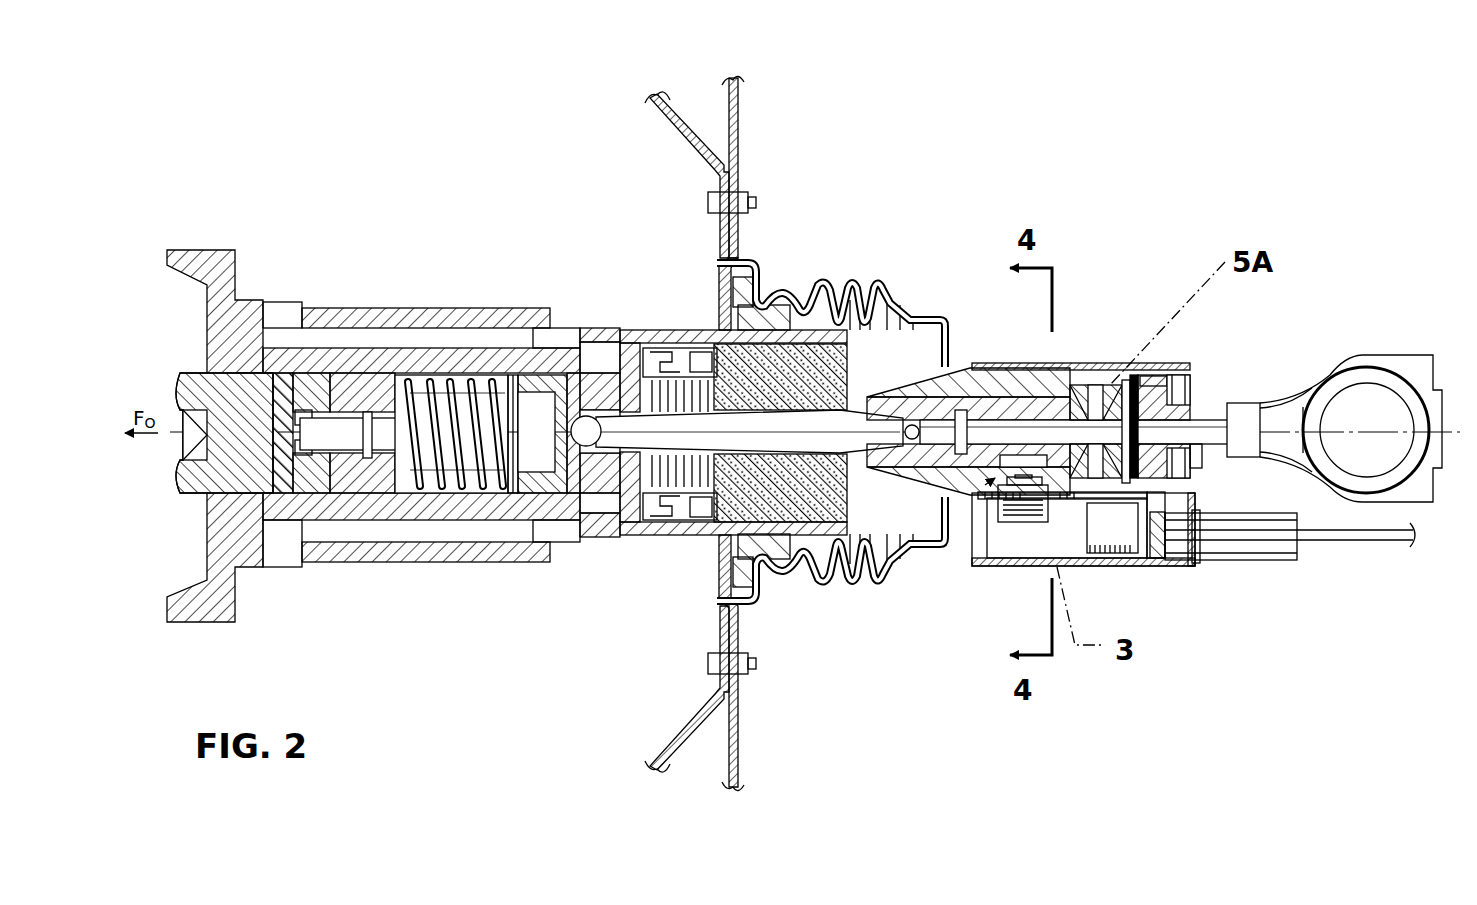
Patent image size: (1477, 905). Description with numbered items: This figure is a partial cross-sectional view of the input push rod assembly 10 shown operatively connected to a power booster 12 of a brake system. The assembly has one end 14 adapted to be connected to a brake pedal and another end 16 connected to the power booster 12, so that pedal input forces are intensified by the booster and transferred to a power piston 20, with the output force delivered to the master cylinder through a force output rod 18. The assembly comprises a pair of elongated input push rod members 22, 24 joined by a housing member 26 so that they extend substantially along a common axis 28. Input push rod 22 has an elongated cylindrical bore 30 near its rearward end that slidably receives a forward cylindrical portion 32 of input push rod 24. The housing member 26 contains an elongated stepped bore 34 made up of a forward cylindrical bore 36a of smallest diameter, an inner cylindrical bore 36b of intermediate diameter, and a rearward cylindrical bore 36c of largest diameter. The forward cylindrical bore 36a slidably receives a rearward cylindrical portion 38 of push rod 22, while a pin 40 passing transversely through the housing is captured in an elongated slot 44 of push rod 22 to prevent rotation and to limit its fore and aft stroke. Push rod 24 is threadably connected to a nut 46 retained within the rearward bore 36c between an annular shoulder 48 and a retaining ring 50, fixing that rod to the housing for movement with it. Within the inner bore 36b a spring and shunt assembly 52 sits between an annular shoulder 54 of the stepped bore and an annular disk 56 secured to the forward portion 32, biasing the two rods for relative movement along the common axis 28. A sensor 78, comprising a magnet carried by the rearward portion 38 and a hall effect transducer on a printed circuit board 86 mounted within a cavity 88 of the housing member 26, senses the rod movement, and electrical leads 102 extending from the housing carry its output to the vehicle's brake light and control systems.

The input push rod assembly 10 is at (1340, 268).
The power booster 12 is at (763, 176).
The one end 14 is at (1340, 363).
The another end 16 is at (583, 407).
The force output rod 18 is at (265, 375).
The power piston 20 is at (609, 392).
The input push rod member 22 is at (737, 440).
The input push rod member 24 is at (1237, 407).
The housing member 26 is at (1058, 362).
The common axis 28 is at (1305, 440).
The elongated cylindrical bore 30 is at (953, 410).
The forward cylindrical portion 32 is at (1027, 407).
The elongated stepped bore 34 is at (1160, 567).
The forward cylindrical bore 36a is at (987, 410).
The inner cylindrical bore 36b is at (1133, 567).
The rearward cylindrical bore 36c is at (1195, 463).
The rearward cylindrical portion 38 is at (962, 493).
The pin 40 is at (907, 322).
The elongated slot 44 is at (912, 500).
The nut 46 is at (1210, 418).
The annular shoulder 48 is at (1167, 367).
The retaining ring 50 is at (1180, 460).
The spring and shunt assembly 52 is at (1090, 392).
The annular shoulder 54 is at (1087, 384).
The annular disk 56 is at (1135, 367).
The sensor 78 is at (975, 567).
The printed circuit board 86 is at (1067, 507).
The cavity 88 is at (1043, 550).
The electrical leads 102 is at (1350, 545).